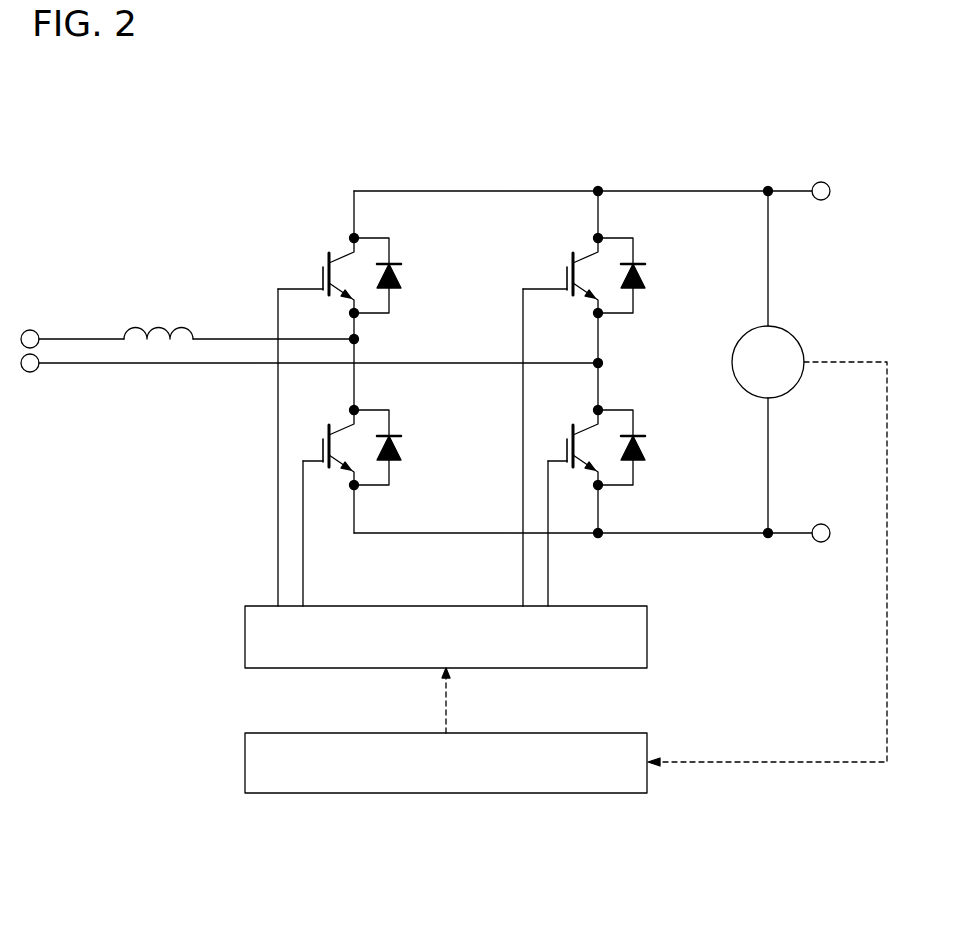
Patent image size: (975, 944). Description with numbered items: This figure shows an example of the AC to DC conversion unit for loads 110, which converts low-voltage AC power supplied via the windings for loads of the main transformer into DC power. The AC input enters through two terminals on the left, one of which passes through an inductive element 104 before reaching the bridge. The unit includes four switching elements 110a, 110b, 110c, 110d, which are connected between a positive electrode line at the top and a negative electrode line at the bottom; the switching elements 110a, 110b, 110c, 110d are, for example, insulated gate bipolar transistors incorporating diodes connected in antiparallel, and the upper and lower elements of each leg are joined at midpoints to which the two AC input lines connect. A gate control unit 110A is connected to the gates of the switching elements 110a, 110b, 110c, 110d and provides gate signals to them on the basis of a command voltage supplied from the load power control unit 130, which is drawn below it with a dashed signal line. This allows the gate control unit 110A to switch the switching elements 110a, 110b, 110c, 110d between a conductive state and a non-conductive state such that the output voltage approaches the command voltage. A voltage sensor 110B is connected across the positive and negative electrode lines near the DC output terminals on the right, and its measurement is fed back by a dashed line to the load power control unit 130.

The inductor / reactor 104 is at (163, 325).
The AC to DC conversion unit for loads 110 is at (548, 310).
The switching element 110a is at (322, 281).
The switching element 110b is at (322, 444).
The switching element 110c is at (567, 281).
The switching element 110d is at (567, 444).
The gate control unit 110A is at (648, 636).
The voltage sensor 110B is at (797, 338).
The load power control unit 130 is at (648, 742).